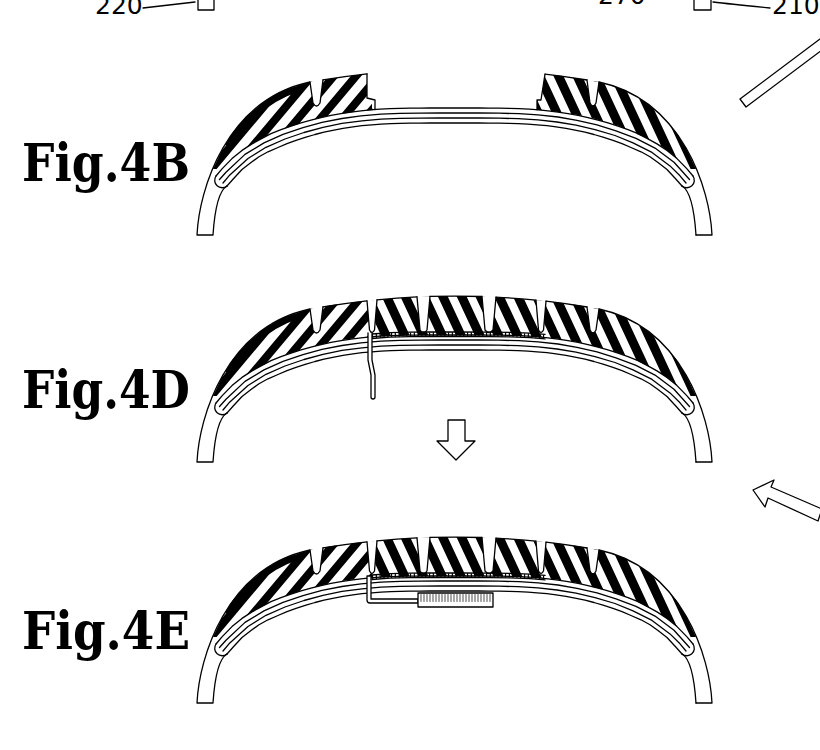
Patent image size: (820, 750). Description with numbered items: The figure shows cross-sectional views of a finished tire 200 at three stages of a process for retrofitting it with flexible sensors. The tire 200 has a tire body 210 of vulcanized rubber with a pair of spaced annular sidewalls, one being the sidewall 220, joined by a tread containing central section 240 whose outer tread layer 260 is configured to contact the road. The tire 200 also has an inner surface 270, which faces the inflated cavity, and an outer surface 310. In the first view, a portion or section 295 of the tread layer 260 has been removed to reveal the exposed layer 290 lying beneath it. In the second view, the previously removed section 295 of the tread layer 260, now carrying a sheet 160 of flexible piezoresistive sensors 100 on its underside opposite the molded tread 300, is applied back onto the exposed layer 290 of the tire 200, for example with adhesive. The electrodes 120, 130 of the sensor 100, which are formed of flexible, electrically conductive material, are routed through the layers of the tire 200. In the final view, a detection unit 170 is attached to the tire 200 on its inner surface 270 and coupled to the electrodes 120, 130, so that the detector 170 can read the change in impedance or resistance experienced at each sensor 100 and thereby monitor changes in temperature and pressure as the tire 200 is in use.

In FIG. 4B, the tire 200 is at (213, 108).
In FIG. 4D, the tire 200 is at (451, 349).
In FIG. 4E, the tire 200 is at (451, 594).
In FIG. 4B, the tire body 210 is at (712, 218).
In FIG. 4D, the tire body 210 is at (709, 392).
In FIG. 4E, the tire body 210 is at (709, 633).
In FIG. 4B, the sidewall 220 is at (199, 218).
In FIG. 4D, the sidewall 220 is at (202, 392).
In FIG. 4E, the sidewall 220 is at (202, 633).
In FIG. 4B, the central section 240 is at (432, 100).
In FIG. 4D, the central section 240 is at (432, 324).
In FIG. 4E, the central section 240 is at (432, 570).
In FIG. 4B, the outer tread layer 260 is at (357, 72).
In FIG. 4D, the outer tread layer 260 is at (525, 261).
In FIG. 4E, the outer tread layer 260 is at (524, 506).
In FIG. 4B, the inner surface 270 is at (692, 198).
In FIG. 4D, the inner surface 270 is at (647, 431).
In FIG. 4E, the inner surface 270 is at (647, 672).
In FIG. 4B, the exposed layer 290 is at (474, 108).
In FIG. 4D, the section of the tread layer 295 is at (389, 273).
In FIG. 4E, the section of the tread layer 295 is at (344, 527).
In FIG. 4B, the tread 300 is at (315, 84).
In FIG. 4D, the tread 300 is at (441, 277).
In FIG. 4E, the tread 300 is at (409, 529).
In FIG. 4B, the outer surface 310 is at (704, 190).
In FIG. 4D, the outer surface 310 is at (745, 426).
In FIG. 4E, the outer surface 310 is at (745, 667).
In FIG. 4D, the flexible sensor 100 is at (472, 371).
In FIG. 4E, the flexible sensor 100 is at (481, 617).
In FIG. 4D, the sheet of sensors 160 is at (458, 335).
In FIG. 4E, the sheet of sensors 160 is at (458, 576).
In FIG. 4D, the electrode 120 is at (320, 384).
In FIG. 4E, the electrode 120 is at (371, 623).
In FIG. 4D, the electrode 130 is at (371, 366).
In FIG. 4E, the electrode 130 is at (392, 589).
In FIG. 4E, the detection unit 170 is at (455, 652).